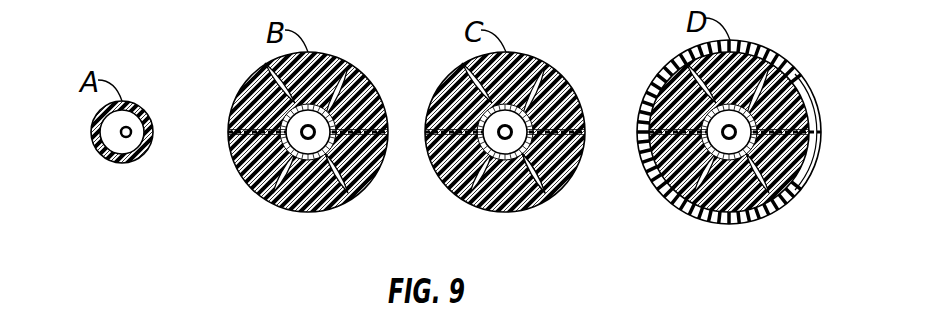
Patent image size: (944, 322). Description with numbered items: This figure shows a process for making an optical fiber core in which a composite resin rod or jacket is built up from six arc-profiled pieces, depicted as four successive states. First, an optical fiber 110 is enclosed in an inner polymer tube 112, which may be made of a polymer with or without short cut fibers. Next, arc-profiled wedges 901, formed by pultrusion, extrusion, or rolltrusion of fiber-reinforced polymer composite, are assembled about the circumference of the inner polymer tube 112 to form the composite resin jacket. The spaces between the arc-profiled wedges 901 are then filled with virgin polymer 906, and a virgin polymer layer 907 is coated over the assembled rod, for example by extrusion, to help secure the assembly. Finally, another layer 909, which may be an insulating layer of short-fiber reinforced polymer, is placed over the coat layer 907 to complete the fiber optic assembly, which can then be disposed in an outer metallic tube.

The optical fiber 110 is at (132, 137).
The inner polymer tube 112 is at (98, 152).
The arc-profiled wedges 901 is at (307, 212).
The virgin polymer 906 is at (482, 208).
The virgin polymer layer 907 is at (560, 188).
The insulating layer 909 is at (777, 200).